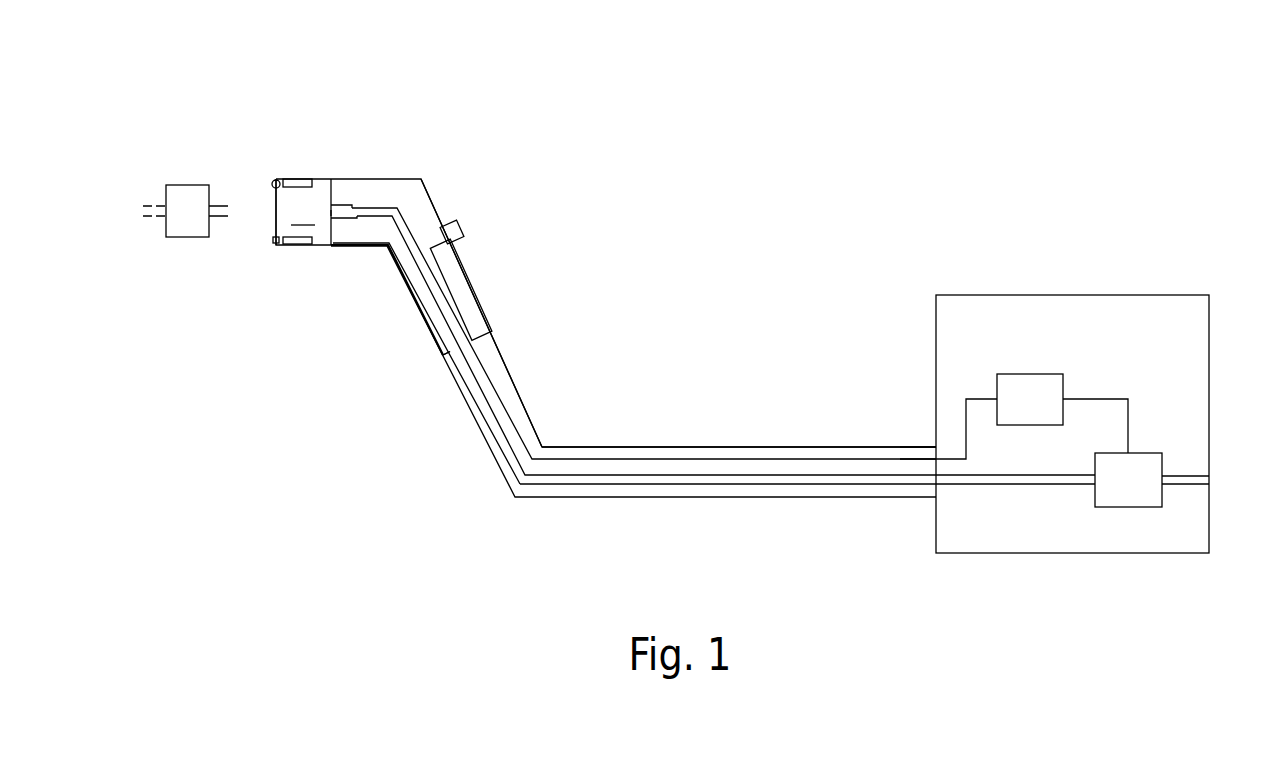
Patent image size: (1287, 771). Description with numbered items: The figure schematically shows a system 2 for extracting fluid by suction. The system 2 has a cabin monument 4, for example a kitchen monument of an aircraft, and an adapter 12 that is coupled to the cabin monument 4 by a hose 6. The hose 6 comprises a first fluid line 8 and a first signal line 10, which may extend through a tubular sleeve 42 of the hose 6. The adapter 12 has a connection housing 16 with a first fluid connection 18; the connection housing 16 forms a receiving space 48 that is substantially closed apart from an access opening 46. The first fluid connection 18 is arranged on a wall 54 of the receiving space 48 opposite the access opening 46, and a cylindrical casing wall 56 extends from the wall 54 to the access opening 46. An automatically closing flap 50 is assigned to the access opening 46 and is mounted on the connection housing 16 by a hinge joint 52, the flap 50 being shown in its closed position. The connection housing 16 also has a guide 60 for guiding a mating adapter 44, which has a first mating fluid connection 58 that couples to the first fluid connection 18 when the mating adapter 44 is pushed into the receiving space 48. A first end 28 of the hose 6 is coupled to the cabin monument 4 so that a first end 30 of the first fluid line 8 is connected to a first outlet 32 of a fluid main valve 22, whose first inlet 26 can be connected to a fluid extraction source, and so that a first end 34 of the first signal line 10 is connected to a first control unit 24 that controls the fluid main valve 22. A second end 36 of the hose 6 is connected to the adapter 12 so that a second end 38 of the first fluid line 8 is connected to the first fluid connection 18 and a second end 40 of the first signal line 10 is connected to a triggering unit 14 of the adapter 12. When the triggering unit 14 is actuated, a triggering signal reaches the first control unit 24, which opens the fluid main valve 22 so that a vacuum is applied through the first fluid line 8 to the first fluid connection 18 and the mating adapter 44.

The system 2 is at (921, 104).
The cabin monument 4 is at (1173, 257).
The hose 6 is at (698, 434).
The first fluid line 8 is at (692, 489).
The first signal line 10 is at (736, 456).
The adapter 12 is at (425, 161).
The triggering unit 14 is at (459, 214).
The connection housing 16 is at (335, 172).
The first fluid connection 18 is at (344, 196).
The fluid main valve 22 is at (1147, 442).
The first control unit 24 is at (1030, 370).
The first inlet 26 is at (1169, 465).
The first end 28 is at (930, 440).
The first end 30 is at (932, 495).
The first outlet 32 is at (1090, 489).
The first end 34 is at (932, 464).
The second end 36 is at (499, 333).
The second end 38 is at (447, 357).
The second end 40 is at (470, 342).
The tubular sleeve 42 is at (638, 442).
The mating adapter 44 is at (182, 180).
The access opening 46 is at (273, 238).
The receiving space 48 is at (303, 212).
The flap 50 is at (273, 204).
The hinge joint 52 is at (276, 174).
The wall 54 is at (338, 229).
The casing wall 56 is at (321, 251).
The first mating fluid connection 58 is at (217, 195).
The guide 60 is at (292, 178).